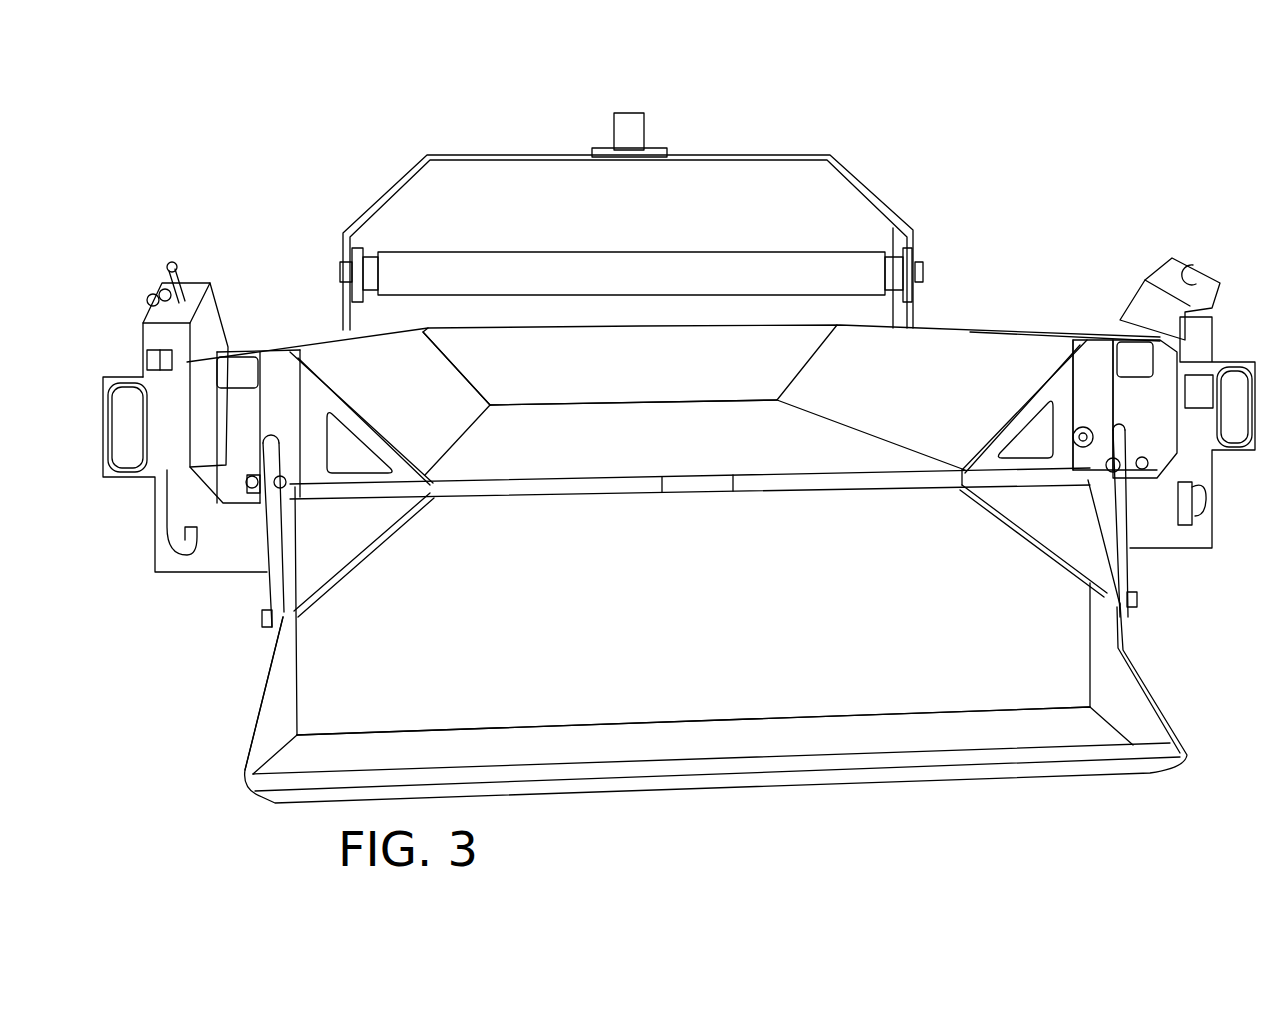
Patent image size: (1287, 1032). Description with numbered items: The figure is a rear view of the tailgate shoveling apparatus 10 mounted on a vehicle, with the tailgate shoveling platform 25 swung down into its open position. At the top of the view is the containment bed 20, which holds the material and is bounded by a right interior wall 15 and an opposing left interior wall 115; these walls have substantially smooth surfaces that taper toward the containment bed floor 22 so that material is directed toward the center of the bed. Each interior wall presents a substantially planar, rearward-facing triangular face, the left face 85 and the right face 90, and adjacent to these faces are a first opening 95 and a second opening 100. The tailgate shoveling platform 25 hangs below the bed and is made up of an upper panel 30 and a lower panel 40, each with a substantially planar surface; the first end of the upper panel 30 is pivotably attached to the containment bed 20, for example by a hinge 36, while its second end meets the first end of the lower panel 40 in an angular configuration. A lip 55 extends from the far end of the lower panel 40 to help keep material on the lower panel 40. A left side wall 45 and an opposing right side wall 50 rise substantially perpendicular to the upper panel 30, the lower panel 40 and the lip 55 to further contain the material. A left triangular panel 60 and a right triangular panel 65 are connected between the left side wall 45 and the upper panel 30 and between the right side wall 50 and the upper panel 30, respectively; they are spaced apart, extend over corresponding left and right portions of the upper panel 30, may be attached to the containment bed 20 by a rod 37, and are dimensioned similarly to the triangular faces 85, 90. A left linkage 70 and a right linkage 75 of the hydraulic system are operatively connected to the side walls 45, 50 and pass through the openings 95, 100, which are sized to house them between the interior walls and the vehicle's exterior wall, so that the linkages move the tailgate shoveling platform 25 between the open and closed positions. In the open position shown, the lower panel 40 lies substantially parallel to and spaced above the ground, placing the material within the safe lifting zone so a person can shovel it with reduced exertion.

The tailgate shoveling apparatus 10 is at (1040, 245).
The right interior wall 15 is at (932, 350).
The containment bed 20 is at (653, 422).
The containment bed floor 22 is at (712, 433).
The tailgate shoveling platform 25 is at (1170, 696).
The upper panel 30 is at (570, 690).
The hinge 36 is at (555, 487).
The rod 37 is at (990, 477).
The lower panel 40 is at (877, 735).
The left side wall 45 is at (282, 717).
The right side wall 50 is at (1112, 673).
The lip 55 is at (717, 767).
The left triangular panel 60 is at (330, 527).
The right triangular panel 65 is at (1032, 515).
The left linkage 70 is at (265, 578).
The right linkage 75 is at (1125, 567).
The left face 85 is at (312, 400).
The right face 90 is at (1063, 393).
The first opening 95 is at (273, 383).
The second opening 100 is at (1095, 377).
The left interior wall 115 is at (427, 387).